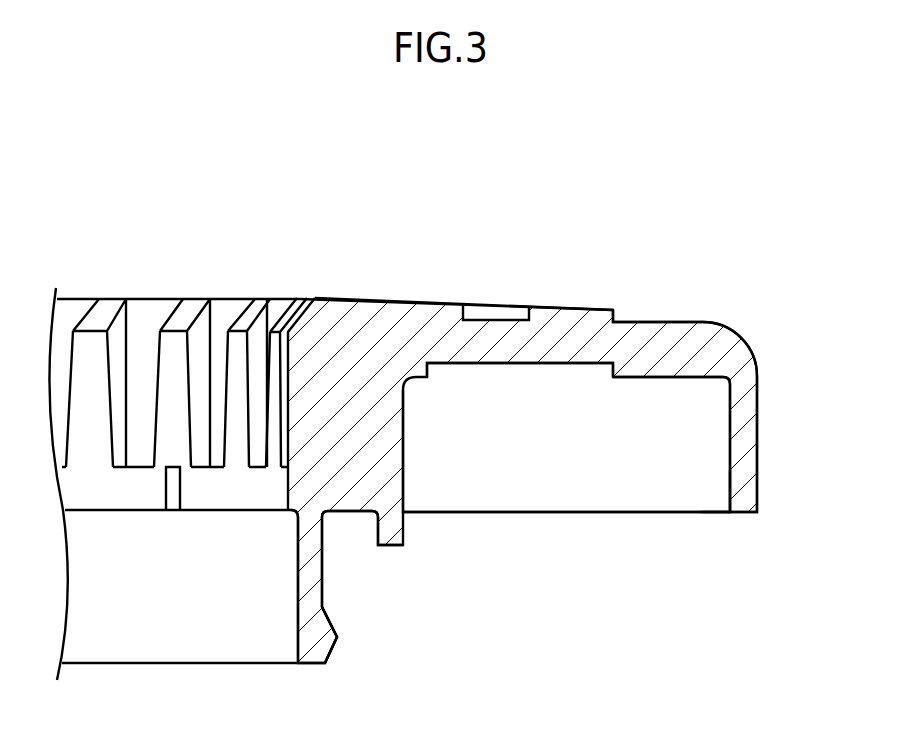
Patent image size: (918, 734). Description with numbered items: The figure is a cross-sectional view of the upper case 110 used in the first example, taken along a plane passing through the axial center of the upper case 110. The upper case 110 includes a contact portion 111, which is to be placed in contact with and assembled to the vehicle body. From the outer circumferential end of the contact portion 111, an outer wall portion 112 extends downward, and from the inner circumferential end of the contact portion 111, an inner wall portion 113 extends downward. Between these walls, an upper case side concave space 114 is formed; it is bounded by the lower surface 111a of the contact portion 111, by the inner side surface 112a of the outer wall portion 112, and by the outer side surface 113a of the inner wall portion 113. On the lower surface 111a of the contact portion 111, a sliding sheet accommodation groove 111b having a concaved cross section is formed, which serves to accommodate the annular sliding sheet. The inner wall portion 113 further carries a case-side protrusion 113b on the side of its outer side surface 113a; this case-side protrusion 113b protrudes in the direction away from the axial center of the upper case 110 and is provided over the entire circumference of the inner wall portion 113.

The upper case 110 is at (535, 224).
The contact portion 111 is at (591, 322).
The lower surface 111a is at (657, 373).
The sliding sheet accommodation groove 111b is at (518, 370).
The outer wall portion 112 is at (750, 430).
The inner side surface 112a is at (731, 490).
The inner wall portion 113 is at (310, 618).
The outer side surface 113a is at (322, 580).
The case-side protrusion 113b is at (333, 640).
The upper case side concave space 114 is at (567, 530).